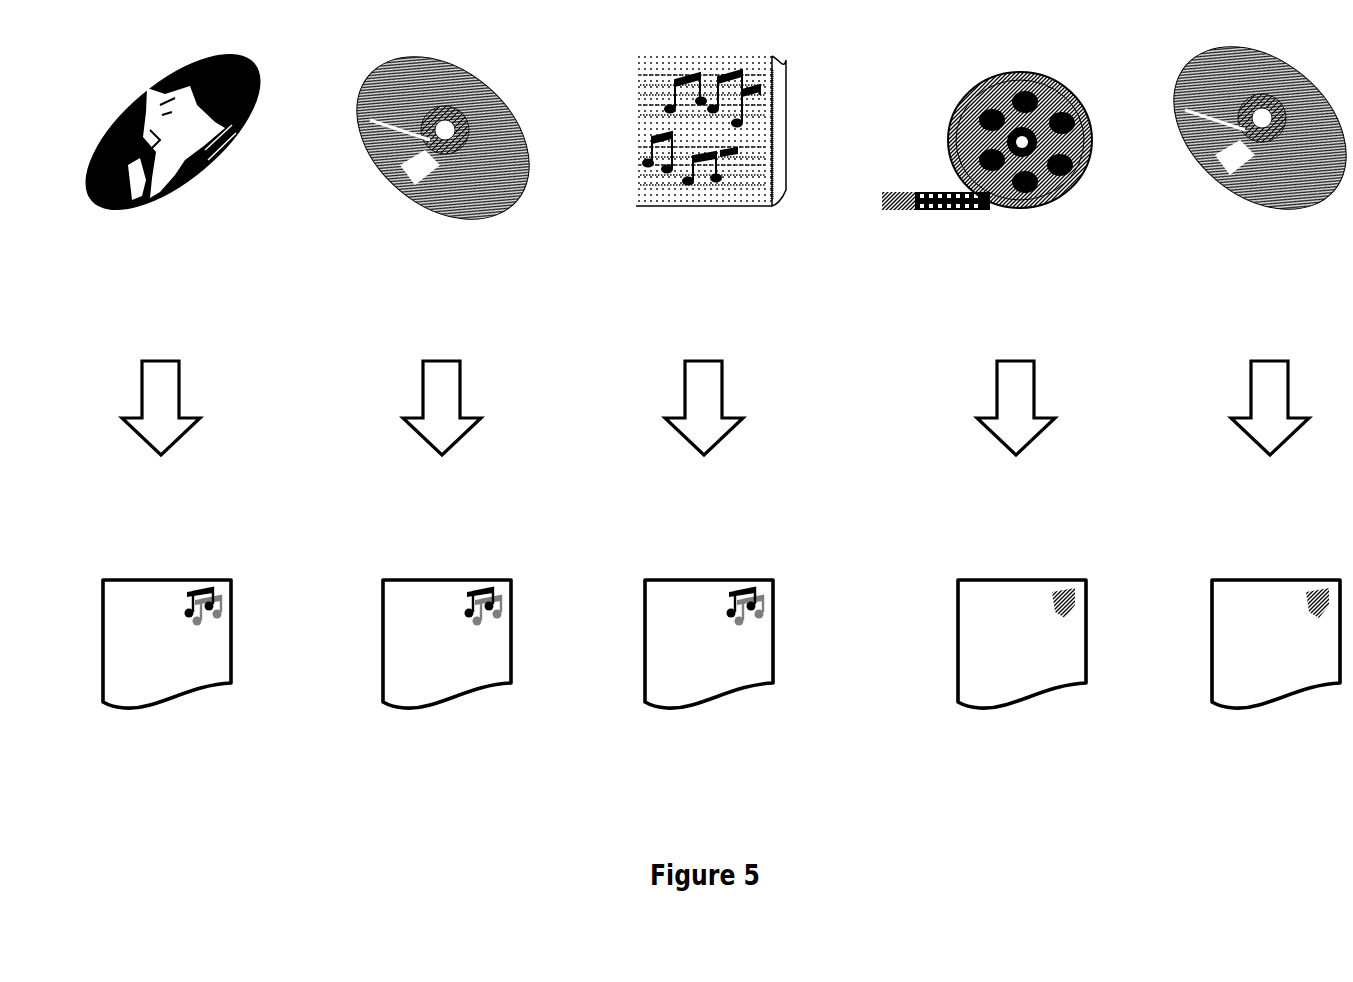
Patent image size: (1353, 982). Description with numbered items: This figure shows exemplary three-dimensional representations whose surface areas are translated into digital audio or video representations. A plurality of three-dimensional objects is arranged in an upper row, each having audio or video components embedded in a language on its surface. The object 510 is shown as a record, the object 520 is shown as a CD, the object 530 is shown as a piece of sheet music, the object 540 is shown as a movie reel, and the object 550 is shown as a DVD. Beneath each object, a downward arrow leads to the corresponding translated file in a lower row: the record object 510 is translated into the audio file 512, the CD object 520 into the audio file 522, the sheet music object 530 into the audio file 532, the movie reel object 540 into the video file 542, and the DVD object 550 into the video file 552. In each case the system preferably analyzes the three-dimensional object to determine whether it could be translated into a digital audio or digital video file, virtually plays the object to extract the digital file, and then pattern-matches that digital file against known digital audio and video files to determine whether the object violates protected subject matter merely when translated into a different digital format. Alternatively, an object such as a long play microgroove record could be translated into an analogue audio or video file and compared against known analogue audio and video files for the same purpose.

The object 510 is at (173, 142).
The object 520 is at (443, 140).
The object 530 is at (711, 156).
The object 540 is at (987, 164).
The object 550 is at (1247, 135).
The audio file 512 is at (167, 667).
The audio file 522 is at (447, 667).
The audio file 532 is at (709, 667).
The video file 542 is at (1022, 667).
The video file 552 is at (1276, 667).